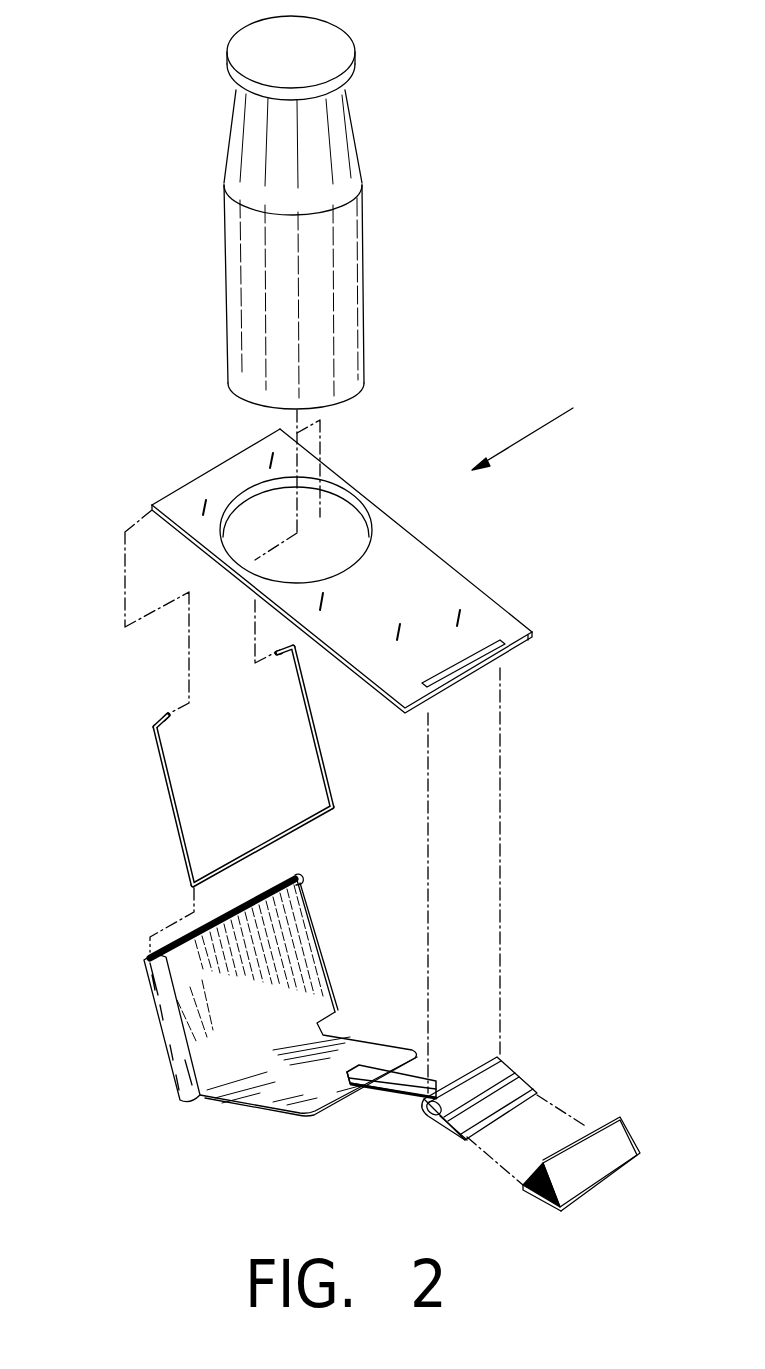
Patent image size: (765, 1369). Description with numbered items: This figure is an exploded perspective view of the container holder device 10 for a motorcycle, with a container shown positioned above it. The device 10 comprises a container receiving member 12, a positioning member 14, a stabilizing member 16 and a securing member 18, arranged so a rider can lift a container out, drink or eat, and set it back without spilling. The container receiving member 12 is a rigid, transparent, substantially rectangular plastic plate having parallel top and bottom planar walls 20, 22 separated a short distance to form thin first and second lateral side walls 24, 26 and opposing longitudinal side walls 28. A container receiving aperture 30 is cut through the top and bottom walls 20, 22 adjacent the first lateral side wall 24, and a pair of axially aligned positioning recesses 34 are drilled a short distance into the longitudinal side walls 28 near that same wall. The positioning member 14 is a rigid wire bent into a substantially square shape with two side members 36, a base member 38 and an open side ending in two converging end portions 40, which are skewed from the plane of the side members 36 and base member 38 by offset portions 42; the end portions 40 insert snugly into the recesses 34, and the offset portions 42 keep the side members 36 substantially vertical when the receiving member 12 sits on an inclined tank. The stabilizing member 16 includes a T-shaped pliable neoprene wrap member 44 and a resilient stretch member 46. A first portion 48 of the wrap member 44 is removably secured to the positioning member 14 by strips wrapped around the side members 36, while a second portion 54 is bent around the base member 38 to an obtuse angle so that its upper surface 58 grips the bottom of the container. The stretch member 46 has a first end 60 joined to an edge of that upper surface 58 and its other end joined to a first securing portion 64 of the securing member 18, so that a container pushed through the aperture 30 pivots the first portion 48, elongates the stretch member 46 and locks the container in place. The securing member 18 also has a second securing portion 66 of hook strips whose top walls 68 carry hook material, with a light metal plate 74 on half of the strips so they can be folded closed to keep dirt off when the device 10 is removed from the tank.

The device 10 is at (538, 429).
The container receiving member 12 is at (517, 634).
The positioning member 14 is at (158, 780).
The stabilizing member 16 is at (172, 1025).
The securing member 18 is at (533, 1080).
The top planar wall 20 is at (435, 588).
The bottom planar wall 22 is at (527, 645).
The first lateral side wall 24 is at (208, 468).
The second lateral side wall 26 is at (467, 676).
The longitudinal side walls 28 is at (498, 598).
The container receiving aperture 30 is at (335, 533).
The positioning recesses 34 is at (275, 447).
The side members 36 is at (313, 747).
The base member 38 is at (240, 860).
The end portions 40 is at (167, 715).
The offset portions 42 is at (152, 738).
The wrap member 44 is at (202, 1090).
The stretch member 46 is at (413, 1087).
The first portion 48 is at (188, 968).
The second portion 54 is at (283, 961).
The upper surface 58 is at (312, 1115).
The first end 60 is at (350, 1078).
The first securing portion 64 is at (455, 1192).
The second securing portion 66 is at (627, 1133).
The top walls 68 is at (532, 1197).
The metal plate 74 is at (587, 1157).